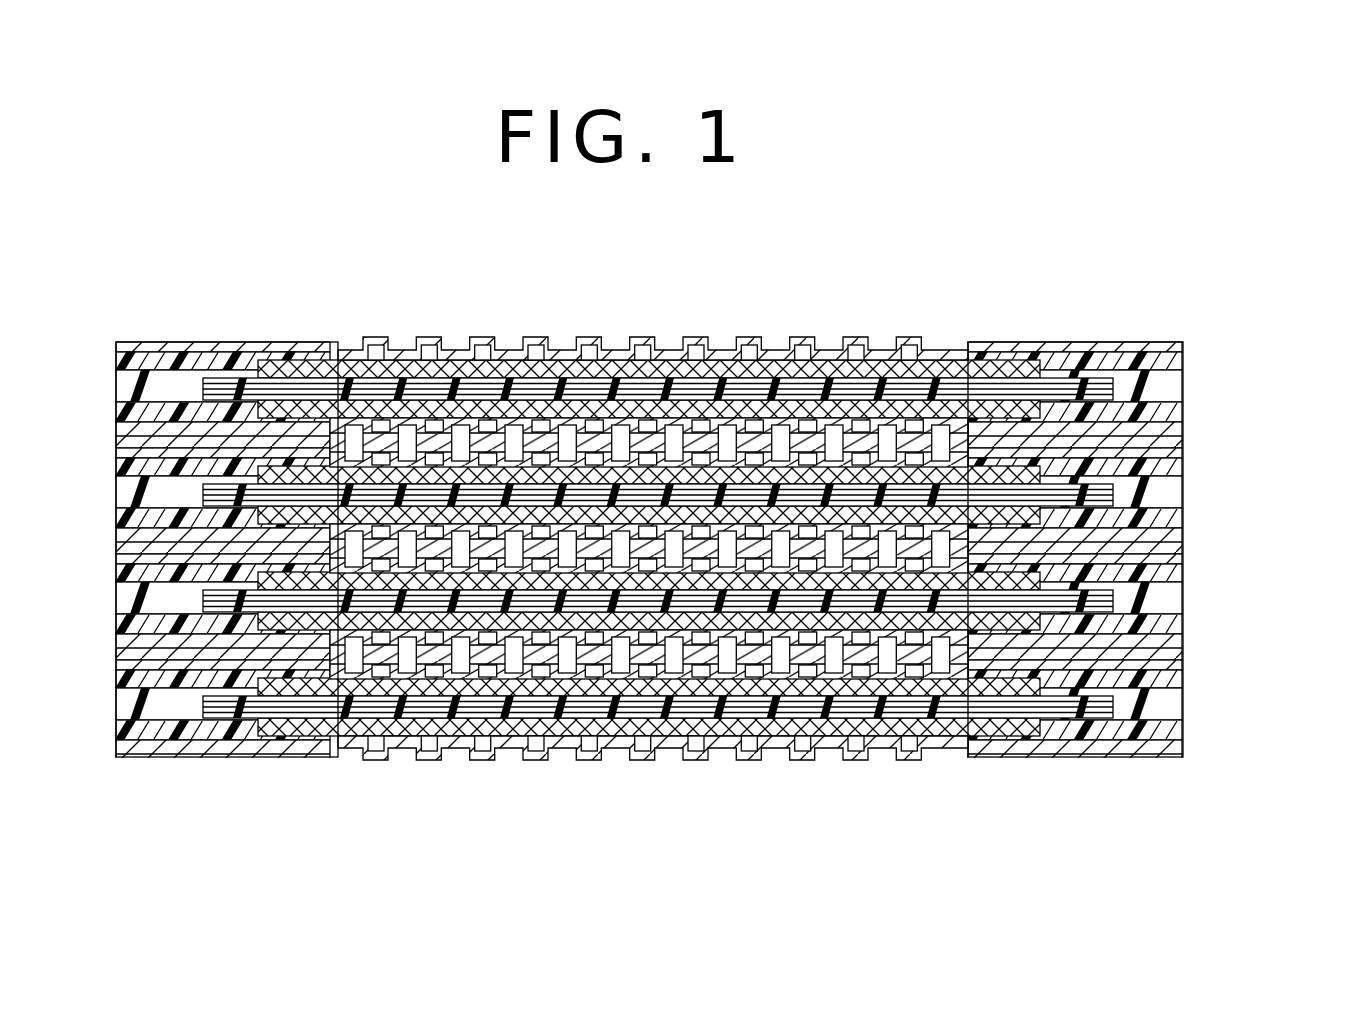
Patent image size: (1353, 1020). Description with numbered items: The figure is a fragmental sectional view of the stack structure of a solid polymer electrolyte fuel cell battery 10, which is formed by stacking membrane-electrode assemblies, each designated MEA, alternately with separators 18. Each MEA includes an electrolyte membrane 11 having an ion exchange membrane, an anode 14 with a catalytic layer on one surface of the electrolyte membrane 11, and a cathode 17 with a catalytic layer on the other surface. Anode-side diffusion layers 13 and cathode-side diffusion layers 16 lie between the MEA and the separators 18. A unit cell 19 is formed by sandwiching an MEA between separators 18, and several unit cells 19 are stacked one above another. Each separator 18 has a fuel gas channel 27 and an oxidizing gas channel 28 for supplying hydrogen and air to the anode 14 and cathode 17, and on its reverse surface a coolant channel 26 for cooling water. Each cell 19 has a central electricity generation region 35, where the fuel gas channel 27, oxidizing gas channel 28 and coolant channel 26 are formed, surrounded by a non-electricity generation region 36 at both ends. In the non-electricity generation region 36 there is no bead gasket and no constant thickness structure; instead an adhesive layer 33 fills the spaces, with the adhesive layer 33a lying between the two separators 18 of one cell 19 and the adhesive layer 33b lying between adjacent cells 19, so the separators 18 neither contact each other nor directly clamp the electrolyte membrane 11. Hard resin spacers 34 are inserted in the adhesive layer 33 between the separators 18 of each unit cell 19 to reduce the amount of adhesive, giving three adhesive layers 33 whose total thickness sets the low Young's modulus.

The solid polymer electrolyte fuel cell battery 10 is at (1112, 337).
The electrolyte membrane 11 is at (1122, 388).
The anode-side diffusion layer 13 is at (1012, 365).
The electrode (anode or fuel electrode) 14 is at (1165, 347).
The cathode-side diffusion layer 16 is at (1028, 405).
The electrode (cathode or air electrode) 17 is at (1150, 404).
The separator 18 is at (1157, 355).
The unit cell 19 is at (112, 342).
The coolant channel 26 is at (726, 350).
The fuel gas channel 27 is at (745, 415).
The oxidizing gas channel 28 is at (778, 440).
The adhesive layer 33 is at (1268, 455).
The adhesive layer 33a is at (1168, 532).
The adhesive layer 33b is at (1158, 466).
The spacer 34 is at (1135, 596).
The electricity generation region 35 is at (322, 767).
The non-electricity generation region 36 is at (320, 767).
The membrane-electrode assembly MEA is at (1245, 318).